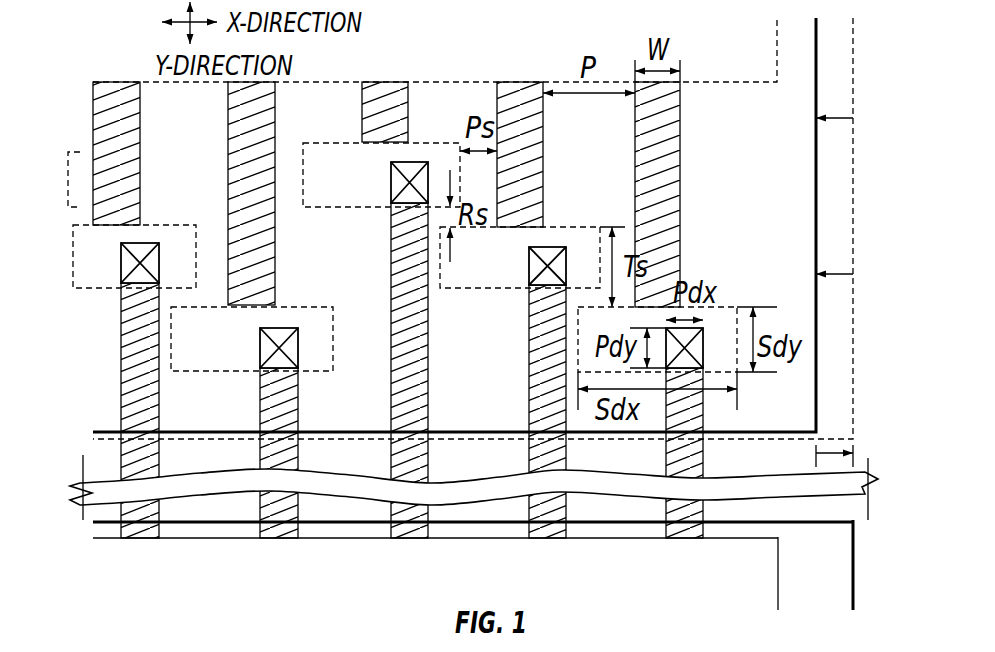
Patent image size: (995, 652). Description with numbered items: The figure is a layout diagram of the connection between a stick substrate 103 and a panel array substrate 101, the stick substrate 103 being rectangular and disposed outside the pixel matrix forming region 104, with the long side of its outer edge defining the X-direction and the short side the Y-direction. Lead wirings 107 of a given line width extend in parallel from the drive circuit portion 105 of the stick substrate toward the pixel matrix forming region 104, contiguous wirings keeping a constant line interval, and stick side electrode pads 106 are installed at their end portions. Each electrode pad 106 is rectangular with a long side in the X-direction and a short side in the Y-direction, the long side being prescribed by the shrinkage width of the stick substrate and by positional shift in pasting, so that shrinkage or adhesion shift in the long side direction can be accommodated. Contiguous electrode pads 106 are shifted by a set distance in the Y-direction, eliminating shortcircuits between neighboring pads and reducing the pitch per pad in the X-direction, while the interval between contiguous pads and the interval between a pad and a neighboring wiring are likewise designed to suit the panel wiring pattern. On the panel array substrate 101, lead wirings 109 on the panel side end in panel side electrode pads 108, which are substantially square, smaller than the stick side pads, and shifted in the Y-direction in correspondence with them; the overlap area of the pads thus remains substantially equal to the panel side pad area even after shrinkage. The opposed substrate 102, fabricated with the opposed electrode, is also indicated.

The panel array substrate 101 is at (853, 240).
The opposed substrate 102 is at (837, 578).
The stick substrate 103 is at (772, 141).
The pixel matrix forming region 104 is at (455, 575).
The drive circuit portion 105 is at (498, 41).
The electrode pad 106 is at (737, 307).
The lead wiring 107 is at (237, 185).
The electrode pad 108 is at (528, 267).
The lead wiring 109 is at (393, 277).